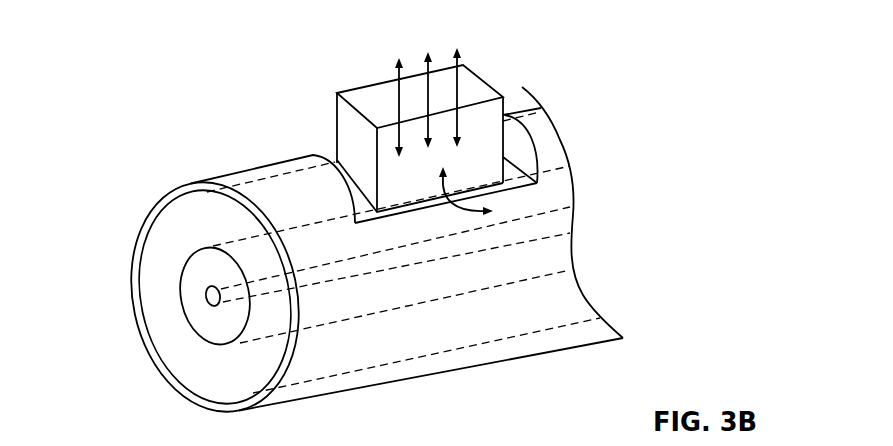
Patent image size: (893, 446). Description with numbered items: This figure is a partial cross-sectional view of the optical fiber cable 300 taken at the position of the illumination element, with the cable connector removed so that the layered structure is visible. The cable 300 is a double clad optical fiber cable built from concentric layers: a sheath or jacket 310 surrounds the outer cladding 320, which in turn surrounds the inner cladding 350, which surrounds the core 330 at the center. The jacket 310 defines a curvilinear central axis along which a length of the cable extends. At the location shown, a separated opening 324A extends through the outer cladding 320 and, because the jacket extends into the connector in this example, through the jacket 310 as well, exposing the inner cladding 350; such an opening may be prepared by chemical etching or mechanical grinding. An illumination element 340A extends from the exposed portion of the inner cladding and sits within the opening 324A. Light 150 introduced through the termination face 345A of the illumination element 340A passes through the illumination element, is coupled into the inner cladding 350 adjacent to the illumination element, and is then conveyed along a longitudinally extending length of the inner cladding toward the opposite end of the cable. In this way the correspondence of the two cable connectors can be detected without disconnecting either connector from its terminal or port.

The optical fiber cable 300 is at (131, 66).
The jacket 310 is at (462, 356).
The outer cladding 320 is at (188, 373).
The inner cladding 350 is at (188, 288).
The core 330 is at (328, 268).
The separated opening 324A is at (522, 147).
The illumination element 340A is at (312, 78).
The termination face 345A is at (470, 83).
The light 150 is at (448, 39).